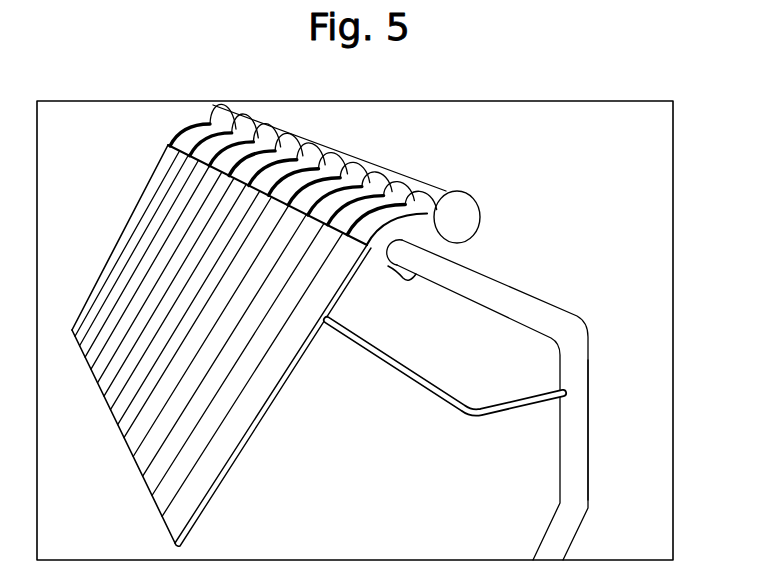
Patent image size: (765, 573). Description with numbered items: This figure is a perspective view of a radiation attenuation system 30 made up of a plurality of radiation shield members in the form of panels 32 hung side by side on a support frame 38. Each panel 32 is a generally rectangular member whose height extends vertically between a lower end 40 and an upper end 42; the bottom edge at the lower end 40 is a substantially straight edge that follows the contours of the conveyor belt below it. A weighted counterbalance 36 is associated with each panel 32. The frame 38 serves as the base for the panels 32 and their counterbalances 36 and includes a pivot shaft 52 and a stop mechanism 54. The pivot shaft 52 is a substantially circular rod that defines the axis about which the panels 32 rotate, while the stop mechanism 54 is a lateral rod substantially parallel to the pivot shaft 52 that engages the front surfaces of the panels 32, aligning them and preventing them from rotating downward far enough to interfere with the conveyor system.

The radiation attenuation system 30 is at (360, 503).
The panel 32 is at (216, 478).
The counterbalance 36 is at (478, 214).
The support frame 38 is at (582, 466).
The lower end 40 is at (152, 481).
The upper end 42 is at (366, 262).
The pivot shaft 52 is at (546, 302).
The stop mechanism 54 is at (410, 380).